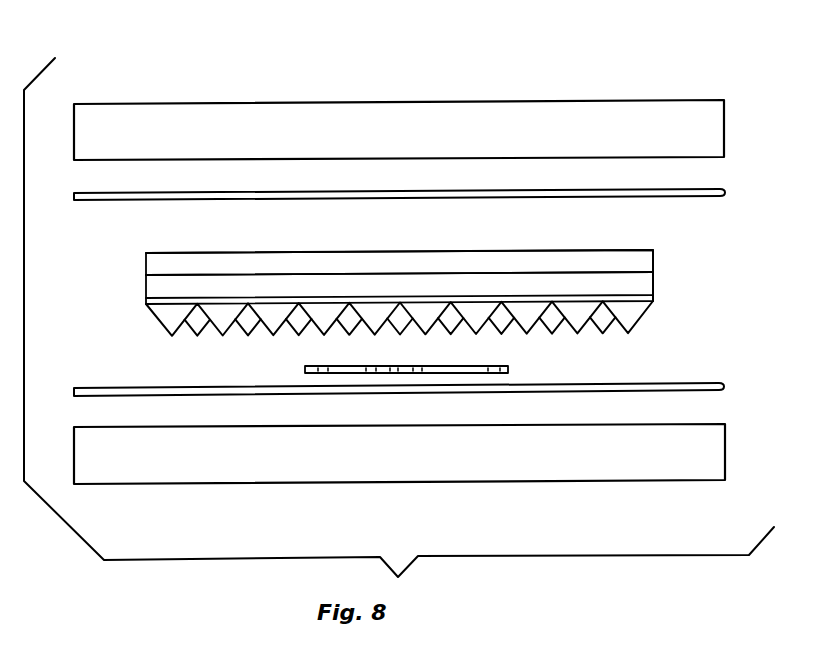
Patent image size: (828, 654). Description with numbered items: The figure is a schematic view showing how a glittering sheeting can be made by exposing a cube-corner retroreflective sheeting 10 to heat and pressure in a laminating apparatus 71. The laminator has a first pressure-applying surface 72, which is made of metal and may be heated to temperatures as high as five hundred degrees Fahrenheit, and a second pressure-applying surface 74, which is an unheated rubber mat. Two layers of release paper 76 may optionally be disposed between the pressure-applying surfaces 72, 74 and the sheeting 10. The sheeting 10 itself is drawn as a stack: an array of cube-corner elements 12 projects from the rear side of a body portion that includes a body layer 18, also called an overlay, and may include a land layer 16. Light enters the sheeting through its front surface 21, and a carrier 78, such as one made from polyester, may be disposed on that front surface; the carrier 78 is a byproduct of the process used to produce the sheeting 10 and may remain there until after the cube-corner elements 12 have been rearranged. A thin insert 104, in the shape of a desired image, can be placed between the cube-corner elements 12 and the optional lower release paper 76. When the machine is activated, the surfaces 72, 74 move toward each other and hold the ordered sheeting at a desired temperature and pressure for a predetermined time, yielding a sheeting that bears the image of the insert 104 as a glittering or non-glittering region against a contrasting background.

The laminating apparatus 71 is at (495, 69).
The first pressure-applying surface 72 is at (619, 106).
The second pressure-applying surface 74 is at (632, 467).
The release paper 76 is at (715, 188).
The carrier 78 is at (631, 255).
The front surface 21 is at (641, 270).
The cube-corner retroreflective sheeting 10 is at (395, 293).
The body layer 18 is at (150, 287).
The land layer 16 is at (146, 300).
The cube-corner elements 12 is at (187, 338).
The insert 104 is at (513, 362).